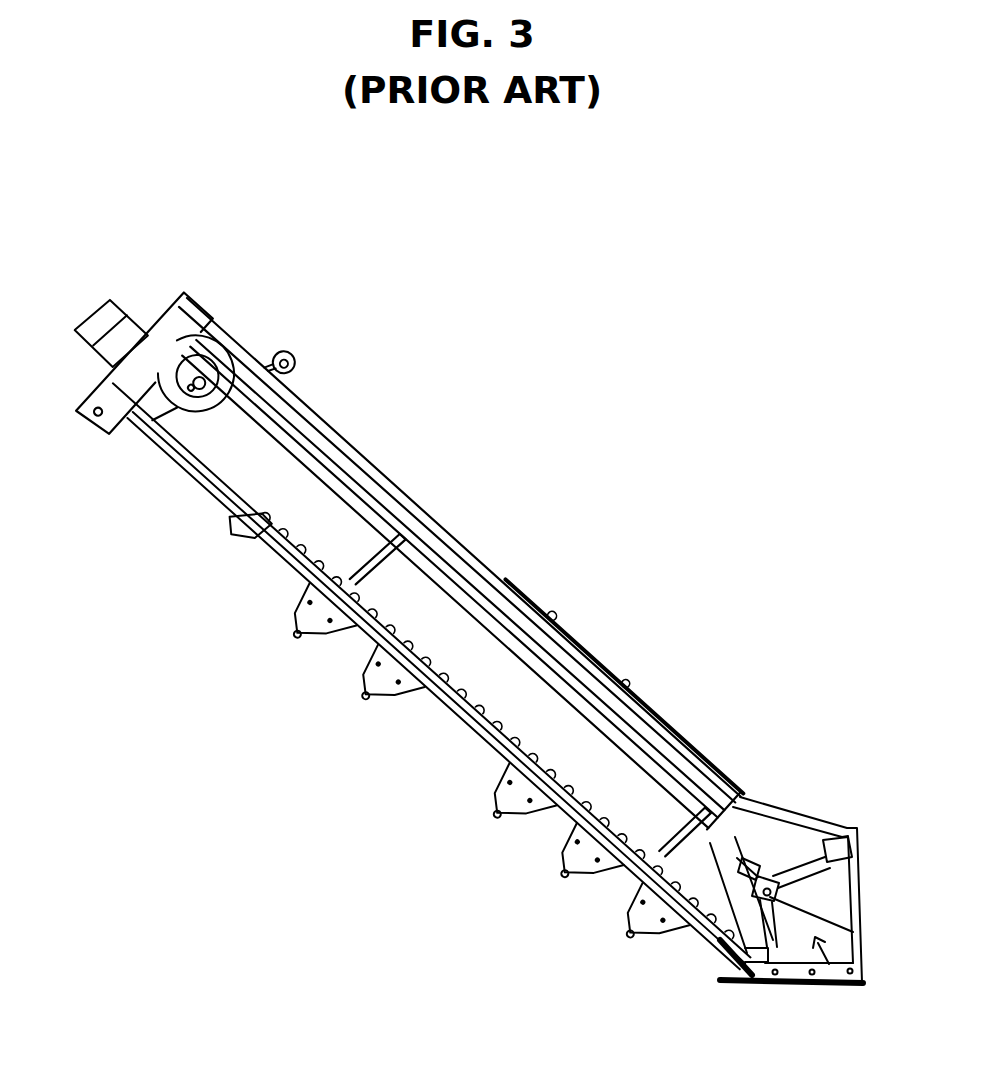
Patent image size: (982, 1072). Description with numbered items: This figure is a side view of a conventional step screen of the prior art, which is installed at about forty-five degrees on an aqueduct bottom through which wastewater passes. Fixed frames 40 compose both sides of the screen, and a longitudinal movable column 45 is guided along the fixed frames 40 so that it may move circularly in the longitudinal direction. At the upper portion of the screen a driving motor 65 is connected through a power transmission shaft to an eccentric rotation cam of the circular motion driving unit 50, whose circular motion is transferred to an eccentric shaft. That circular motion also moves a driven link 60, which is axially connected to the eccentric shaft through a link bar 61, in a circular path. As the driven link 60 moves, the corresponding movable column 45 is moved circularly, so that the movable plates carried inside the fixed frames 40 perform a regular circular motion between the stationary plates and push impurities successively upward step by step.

The fixed frame 40 is at (409, 602).
The movable column 45 is at (411, 675).
The circular motion driving unit 50 is at (228, 339).
The driven link 60 is at (801, 917).
The link bar 61 is at (627, 649).
The driving motor 65 is at (103, 312).